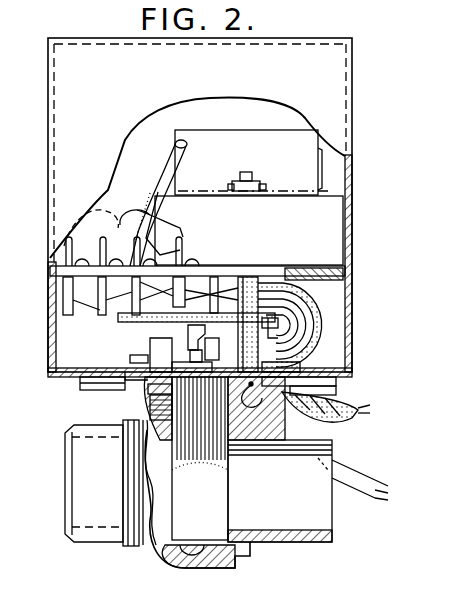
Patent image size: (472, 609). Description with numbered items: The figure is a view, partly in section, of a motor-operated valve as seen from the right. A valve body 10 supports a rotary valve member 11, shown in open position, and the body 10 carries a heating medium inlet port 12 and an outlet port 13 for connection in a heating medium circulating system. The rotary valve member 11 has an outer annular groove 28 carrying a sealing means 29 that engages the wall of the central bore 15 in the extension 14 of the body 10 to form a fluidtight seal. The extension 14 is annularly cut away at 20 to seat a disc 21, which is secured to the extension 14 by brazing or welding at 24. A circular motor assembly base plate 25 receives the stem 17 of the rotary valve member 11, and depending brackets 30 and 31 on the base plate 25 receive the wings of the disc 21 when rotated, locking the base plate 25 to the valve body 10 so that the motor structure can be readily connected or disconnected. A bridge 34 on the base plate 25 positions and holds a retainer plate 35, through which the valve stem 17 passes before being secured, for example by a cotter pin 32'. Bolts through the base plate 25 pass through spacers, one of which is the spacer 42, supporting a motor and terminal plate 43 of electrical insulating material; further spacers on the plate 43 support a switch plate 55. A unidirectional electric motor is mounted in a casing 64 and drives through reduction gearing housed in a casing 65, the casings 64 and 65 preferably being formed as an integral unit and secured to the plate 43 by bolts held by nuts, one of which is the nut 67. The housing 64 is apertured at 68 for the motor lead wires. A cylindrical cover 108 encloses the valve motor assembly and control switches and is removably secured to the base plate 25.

The cylindrical cover 108 is at (200, 205).
The aperture 68 is at (184, 148).
The motor casing 64 is at (254, 142).
The nut 67 is at (254, 182).
The reduction gearing casing 65 is at (249, 230).
The spacer 42 is at (246, 305).
The motor and terminal plate 43 is at (307, 278).
The switch plate 55 is at (118, 318).
The bridge 34 is at (130, 364).
The retainer plate 35 is at (162, 370).
The valve stem 17 is at (188, 338).
The annular cutaway 20 is at (175, 372).
The cotter pin 32' is at (188, 349).
The disc 21 is at (126, 378).
The depending bracket 30 is at (80, 386).
The sealing means 29 is at (160, 394).
The extension 14 is at (150, 405).
The outlet port 13 is at (66, 470).
The outer annular groove 28 is at (155, 482).
The motor assembly base plate 25 is at (332, 382).
The depending bracket 31 is at (320, 391).
The brazing or welding 24 is at (334, 446).
The central bore 15 is at (257, 400).
The rotary valve member 11 is at (210, 470).
The heating medium inlet port 12 is at (326, 516).
The valve body 10 is at (250, 545).